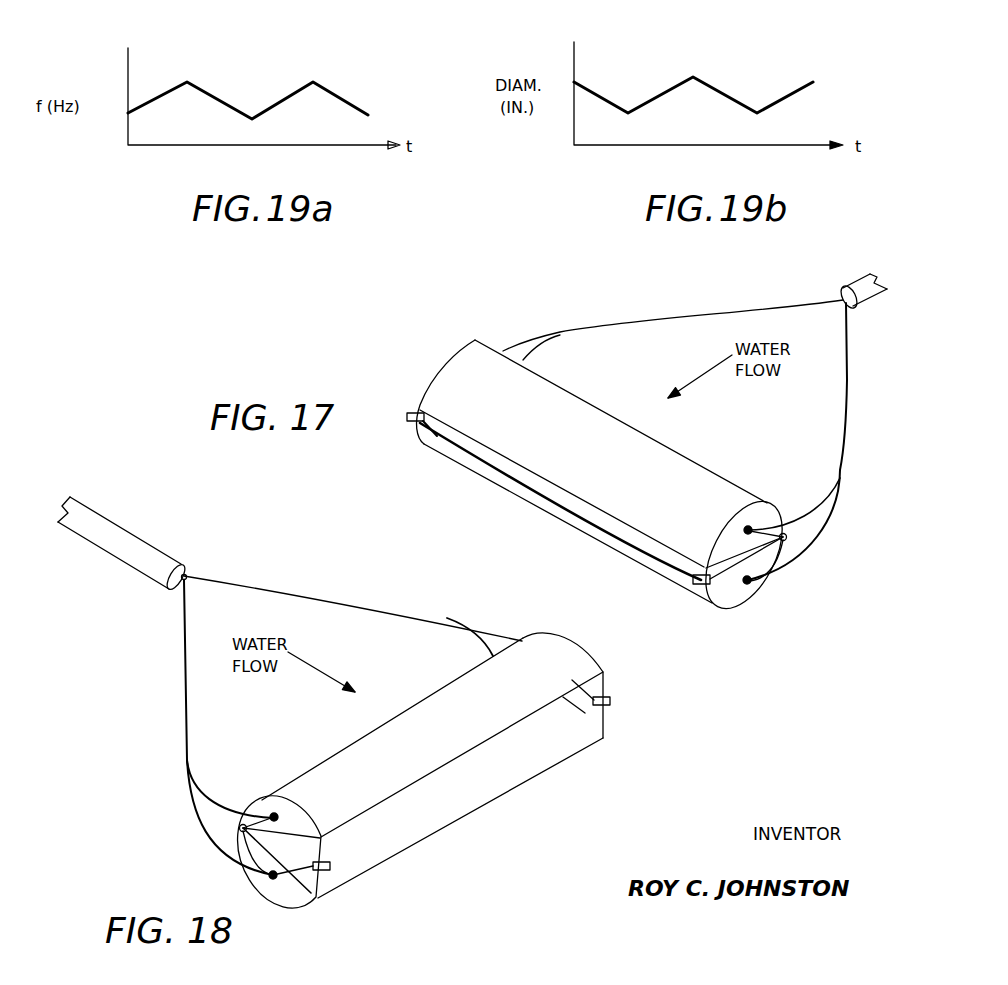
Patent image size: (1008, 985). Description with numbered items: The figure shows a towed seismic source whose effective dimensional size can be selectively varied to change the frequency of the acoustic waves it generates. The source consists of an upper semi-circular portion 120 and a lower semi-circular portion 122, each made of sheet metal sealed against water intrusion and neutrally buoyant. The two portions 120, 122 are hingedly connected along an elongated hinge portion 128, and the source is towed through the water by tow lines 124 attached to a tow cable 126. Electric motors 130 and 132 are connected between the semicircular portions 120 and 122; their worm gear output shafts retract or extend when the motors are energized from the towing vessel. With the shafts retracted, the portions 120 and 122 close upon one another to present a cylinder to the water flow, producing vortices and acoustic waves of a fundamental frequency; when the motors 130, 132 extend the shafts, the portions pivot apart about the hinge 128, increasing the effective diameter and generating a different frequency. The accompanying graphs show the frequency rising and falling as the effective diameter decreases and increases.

In FIG. 17, the upper semi-circular portion 120 is at (645, 442).
In FIG. 18, the upper semi-circular portion 120 is at (352, 750).
In FIG. 17, the lower semi-circular portion 122 is at (477, 467).
In FIG. 18, the lower semi-circular portion 122 is at (488, 787).
In FIG. 17, the tow lines 124 is at (627, 323).
In FIG. 18, the tow lines 124 is at (368, 608).
In FIG. 17, the tow cable 126 is at (860, 278).
In FIG. 18, the tow cable 126 is at (133, 542).
In FIG. 17, the elongated hinge portion 128 is at (790, 545).
In FIG. 18, the elongated hinge portion 128 is at (240, 830).
In FIG. 17, the electric motor 130 is at (410, 413).
In FIG. 18, the electric motor 130 is at (328, 862).
In FIG. 17, the electric motor 132 is at (702, 588).
In FIG. 18, the electric motor 132 is at (610, 705).